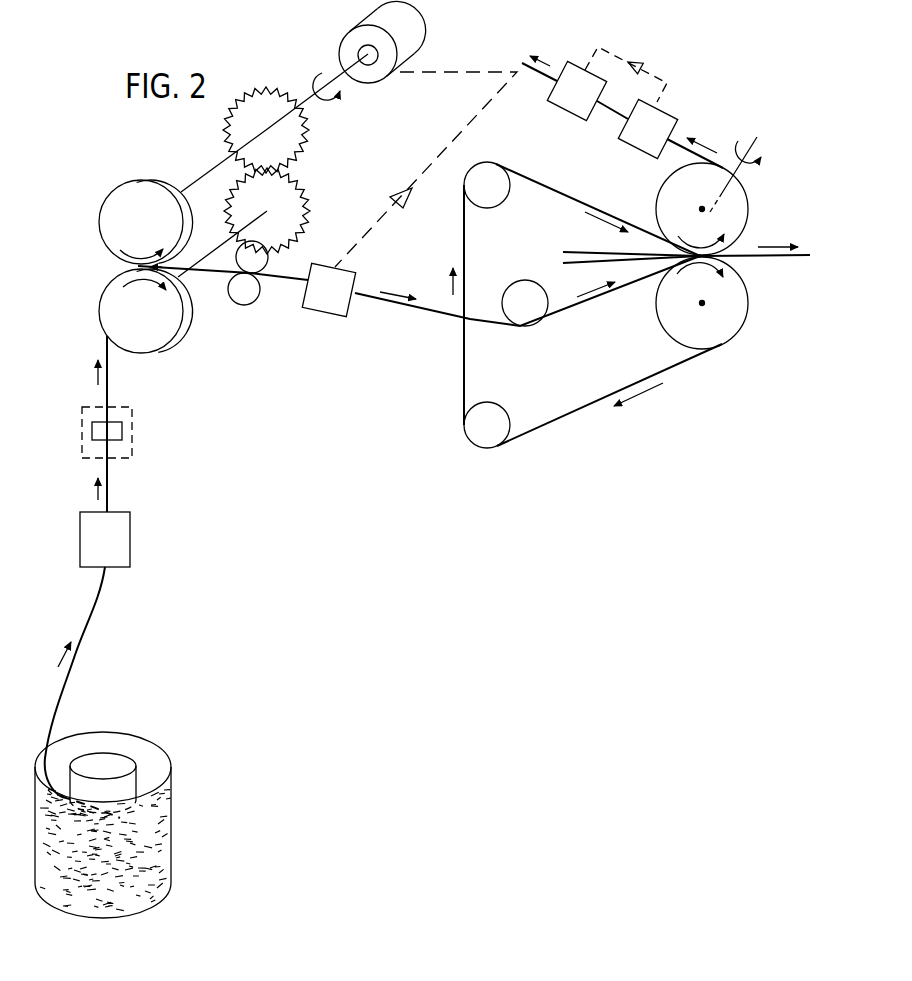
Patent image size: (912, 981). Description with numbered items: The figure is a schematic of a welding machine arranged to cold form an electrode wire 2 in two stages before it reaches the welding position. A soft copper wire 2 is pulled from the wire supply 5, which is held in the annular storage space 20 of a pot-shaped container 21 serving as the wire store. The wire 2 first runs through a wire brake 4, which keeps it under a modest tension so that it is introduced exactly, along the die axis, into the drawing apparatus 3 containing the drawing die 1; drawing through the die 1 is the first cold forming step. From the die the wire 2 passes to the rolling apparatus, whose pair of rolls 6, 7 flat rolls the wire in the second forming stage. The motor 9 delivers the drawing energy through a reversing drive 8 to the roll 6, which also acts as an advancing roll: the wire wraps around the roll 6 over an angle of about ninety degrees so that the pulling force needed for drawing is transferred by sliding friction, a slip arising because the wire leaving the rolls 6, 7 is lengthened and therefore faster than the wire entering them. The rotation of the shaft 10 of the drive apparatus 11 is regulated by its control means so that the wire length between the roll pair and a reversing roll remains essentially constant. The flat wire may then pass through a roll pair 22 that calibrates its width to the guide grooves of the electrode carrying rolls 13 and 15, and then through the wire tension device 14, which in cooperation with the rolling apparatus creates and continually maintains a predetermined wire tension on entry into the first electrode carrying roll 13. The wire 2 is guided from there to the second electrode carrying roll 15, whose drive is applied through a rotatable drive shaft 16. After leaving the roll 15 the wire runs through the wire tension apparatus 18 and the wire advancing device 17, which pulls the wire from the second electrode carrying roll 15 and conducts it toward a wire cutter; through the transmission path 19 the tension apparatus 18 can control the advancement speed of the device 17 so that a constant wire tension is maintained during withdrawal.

The drawing die 1 is at (122, 430).
The electrode wire 2 is at (107, 490).
The drawing apparatus 3 is at (132, 410).
The wire brake 4 is at (130, 542).
The wire supply 5 is at (128, 811).
The roll 6 is at (113, 315).
The roll 7 is at (123, 207).
The reversing drive 8 is at (277, 177).
The motor 9 is at (353, 25).
The shaft 10 is at (343, 78).
The drive apparatus 11 is at (377, 60).
The first electrode carrying roll 13 is at (733, 302).
The wire tension device 14 is at (325, 300).
The second electrode carrying roll 15 is at (735, 212).
The rotatable drive shaft 16 is at (742, 140).
The wire advancement device 17 is at (572, 98).
The wire tension apparatus 18 is at (640, 135).
The transmission path 19 is at (670, 87).
The annular storage space 20 is at (153, 770).
The pot-shaped container 21 is at (173, 802).
The roll pair 22 is at (242, 300).